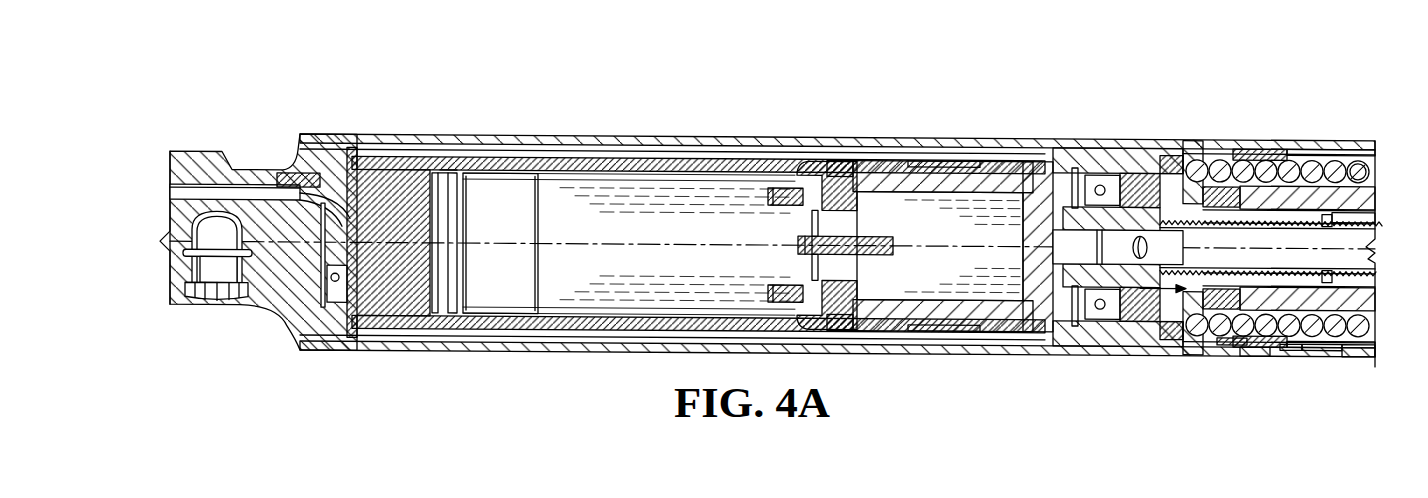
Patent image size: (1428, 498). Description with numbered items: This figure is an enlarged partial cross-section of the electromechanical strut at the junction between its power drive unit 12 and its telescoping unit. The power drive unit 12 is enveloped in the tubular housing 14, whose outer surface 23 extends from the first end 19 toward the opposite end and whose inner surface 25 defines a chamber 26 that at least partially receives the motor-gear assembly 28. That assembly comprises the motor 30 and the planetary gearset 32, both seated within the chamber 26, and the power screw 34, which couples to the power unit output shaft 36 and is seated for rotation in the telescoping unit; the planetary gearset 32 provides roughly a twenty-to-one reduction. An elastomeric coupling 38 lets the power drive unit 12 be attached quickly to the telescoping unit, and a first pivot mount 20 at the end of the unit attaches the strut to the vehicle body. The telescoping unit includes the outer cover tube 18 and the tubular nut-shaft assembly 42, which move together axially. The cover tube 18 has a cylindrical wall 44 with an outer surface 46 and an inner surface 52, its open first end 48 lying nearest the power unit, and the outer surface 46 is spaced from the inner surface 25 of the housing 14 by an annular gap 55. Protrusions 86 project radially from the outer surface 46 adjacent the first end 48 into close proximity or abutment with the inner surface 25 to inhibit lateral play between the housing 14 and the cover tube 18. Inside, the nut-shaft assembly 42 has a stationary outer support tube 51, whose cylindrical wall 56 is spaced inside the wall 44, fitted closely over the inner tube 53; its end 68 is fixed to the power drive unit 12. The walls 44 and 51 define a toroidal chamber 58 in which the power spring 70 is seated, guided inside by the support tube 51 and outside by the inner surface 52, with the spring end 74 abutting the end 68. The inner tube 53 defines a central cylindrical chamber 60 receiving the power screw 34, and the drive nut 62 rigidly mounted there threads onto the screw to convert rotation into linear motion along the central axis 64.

The power drive unit 12 is at (665, 98).
The housing 14 is at (1073, 143).
The outer cover tube 18 is at (1305, 343).
The first end 19 is at (293, 133).
The first pivot mount 20 is at (176, 293).
The outer surface 23 is at (953, 137).
The inner surface 25 is at (797, 150).
The chamber 26 is at (498, 277).
The motor-gear assembly 28 is at (598, 198).
The motor 30 is at (643, 188).
The planetary gearset 32 is at (898, 205).
The power screw 34 is at (1180, 232).
The power unit output shaft 36 is at (1078, 240).
The elastomeric coupling 38 is at (1040, 168).
The tubular nut-shaft assembly 42 is at (1158, 297).
The cylindrical wall 44 is at (1325, 345).
The outer surface 46 is at (1347, 150).
The first end 48 is at (1233, 157).
The outer support tube 51 is at (1318, 155).
The inner surface 52 is at (1282, 153).
The inner tube 53 is at (1343, 155).
The annular gap 55 is at (1353, 357).
The cylindrical wall 56 is at (1217, 340).
The toroidal chamber 58 is at (1382, 158).
The cylindrical chamber 60 is at (1365, 217).
The drive nut 62 is at (1242, 350).
The longitudinal central axis 64 is at (682, 242).
The end 68 is at (1163, 158).
The power spring 70 is at (1368, 325).
The end 74 is at (1190, 158).
The protrusion 86 is at (1260, 150).